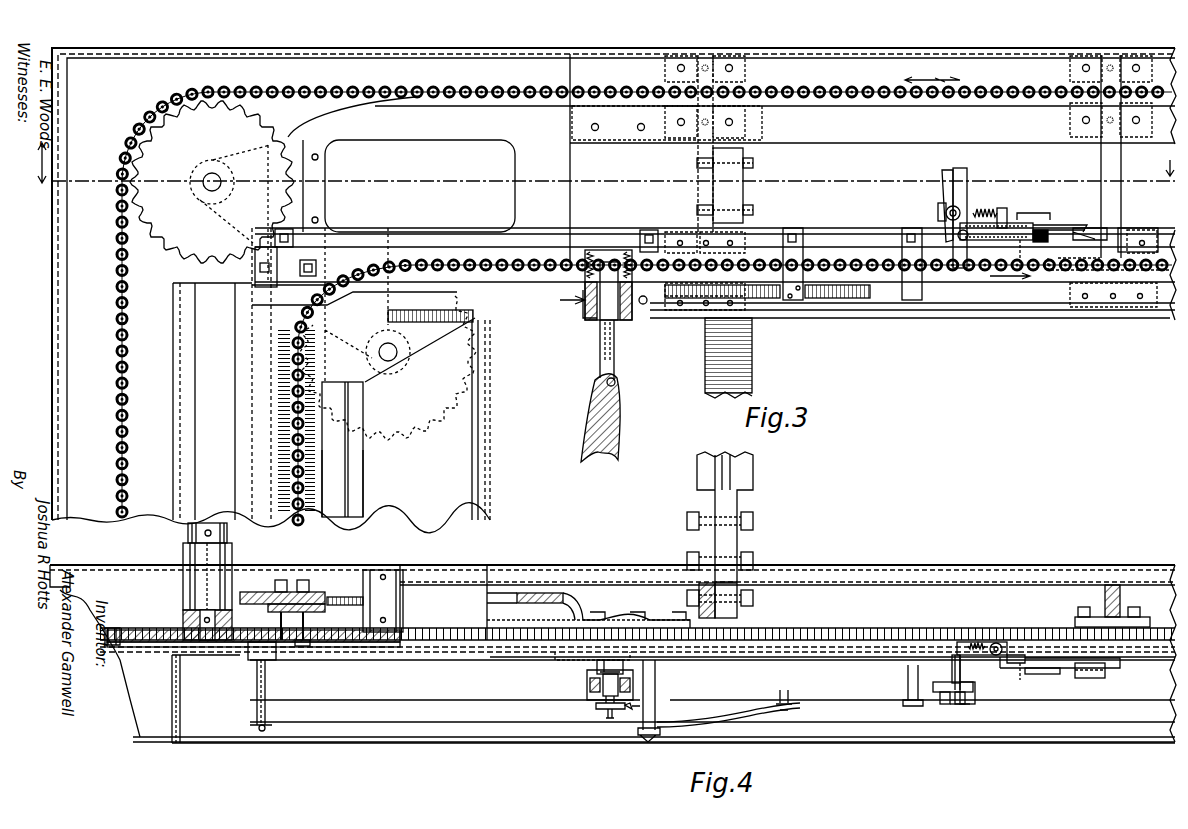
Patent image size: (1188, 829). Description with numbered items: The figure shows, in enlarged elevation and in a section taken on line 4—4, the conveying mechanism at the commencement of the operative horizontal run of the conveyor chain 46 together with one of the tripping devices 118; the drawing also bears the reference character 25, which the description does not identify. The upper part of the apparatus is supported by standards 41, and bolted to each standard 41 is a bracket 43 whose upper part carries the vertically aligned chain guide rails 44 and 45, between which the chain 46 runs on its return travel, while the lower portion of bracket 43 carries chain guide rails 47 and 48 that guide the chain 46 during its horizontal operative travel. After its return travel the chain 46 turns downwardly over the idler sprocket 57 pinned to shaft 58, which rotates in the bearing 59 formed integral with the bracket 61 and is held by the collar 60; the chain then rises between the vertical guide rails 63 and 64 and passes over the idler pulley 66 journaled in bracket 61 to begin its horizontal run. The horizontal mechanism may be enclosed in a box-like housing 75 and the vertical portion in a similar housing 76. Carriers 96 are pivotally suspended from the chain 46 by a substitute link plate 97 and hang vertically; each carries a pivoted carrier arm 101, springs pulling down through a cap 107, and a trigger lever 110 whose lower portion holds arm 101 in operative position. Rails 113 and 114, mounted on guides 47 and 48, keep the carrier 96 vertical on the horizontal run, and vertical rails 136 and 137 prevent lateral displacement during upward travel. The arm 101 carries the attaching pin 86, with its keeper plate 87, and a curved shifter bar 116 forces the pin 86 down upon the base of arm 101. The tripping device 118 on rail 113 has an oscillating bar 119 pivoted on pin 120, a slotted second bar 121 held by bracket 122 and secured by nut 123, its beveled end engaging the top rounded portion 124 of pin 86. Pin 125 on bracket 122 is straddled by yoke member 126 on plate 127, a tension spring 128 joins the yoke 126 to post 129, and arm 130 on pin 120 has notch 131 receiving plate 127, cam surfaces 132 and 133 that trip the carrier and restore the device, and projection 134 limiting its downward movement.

In FIG. 3, the section line 4— 4 is at (606, 170).
In FIG. 3, the brush / tassel 25 is at (612, 433).
In FIG. 3, the standard 41 is at (745, 190).
In FIG. 4, the standard 41 is at (753, 468).
In FIG. 3, the bracket 43 is at (698, 190).
In FIG. 4, the bracket 43 is at (700, 543).
In FIG. 3, the chain guide rail 44 is at (578, 72).
In FIG. 3, the chain guide rail 45 is at (575, 127).
In FIG. 3, the conveyor chain 46 is at (476, 92).
In FIG. 4, the conveyor chain 46 is at (112, 628).
In FIG. 3, the chain guide rail 47 is at (1162, 245).
In FIG. 4, the chain guide rail 47 is at (803, 628).
In FIG. 3, the chain guide rail 48 is at (1150, 285).
In FIG. 4, the chain guide rail 48 is at (508, 632).
In FIG. 3, the idler sprocket 57 is at (165, 150).
In FIG. 4, the idler sprocket 57 is at (150, 618).
In FIG. 3, the shaft 58 is at (211, 172).
In FIG. 4, the shaft 58 is at (200, 645).
In FIG. 4, the bearing 59 is at (213, 577).
In FIG. 4, the collar 60 is at (228, 534).
In FIG. 3, the bracket 61 is at (432, 140).
In FIG. 4, the bracket 61 is at (432, 597).
In FIG. 3, the guide rail 63 is at (278, 478).
In FIG. 3, the guide rail 64 is at (330, 486).
In FIG. 3, the idler pulley 66 is at (420, 340).
In FIG. 3, the housing 75 is at (958, 55).
In FIG. 4, the housing 75 is at (1065, 580).
In FIG. 3, the housing 76 is at (72, 405).
In FIG. 4, the housing 76 is at (110, 565).
In FIG. 3, the article attaching and identification member 86 is at (603, 330).
In FIG. 4, the article attaching and identification member 86 is at (628, 710).
In FIG. 3, the keeper plate 87 is at (600, 355).
In FIG. 3, the carrier 96 is at (585, 318).
In FIG. 4, the carrier 96 is at (588, 670).
In FIG. 4, the substitute link plate 97 is at (558, 660).
In FIG. 3, the carrier arm 101 is at (618, 325).
In FIG. 4, the carrier arm 101 is at (605, 705).
In FIG. 4, the cap 107 is at (633, 676).
In FIG. 3, the trigger lever 110 is at (608, 250).
In FIG. 4, the trigger lever 110 is at (600, 685).
In FIG. 3, the rail 113 is at (840, 248).
In FIG. 4, the rail 113 is at (510, 652).
In FIG. 3, the rail 114 is at (903, 318).
In FIG. 3, the shifter bar 116 is at (398, 297).
In FIG. 4, the shifter bar 116 is at (367, 722).
In FIG. 4, the tripping device 118 is at (989, 670).
In FIG. 3, the oscillating bar 119 is at (967, 184).
In FIG. 4, the oscillating bar 119 is at (972, 700).
In FIG. 3, the pin 120 is at (970, 236).
In FIG. 3, the second bar 121 is at (950, 185).
In FIG. 4, the second bar 121 is at (940, 702).
In FIG. 3, the bracket 122 is at (940, 210).
In FIG. 4, the bracket 122 is at (932, 684).
In FIG. 3, the nut 123 is at (945, 216).
In FIG. 4, the nut 123 is at (958, 705).
In FIG. 4, the top rounded portion 124 is at (625, 703).
In FIG. 4, the pin 125 is at (953, 672).
In FIG. 4, the yoke member 126 is at (957, 650).
In FIG. 4, the plate 127 is at (1036, 651).
In FIG. 3, the tension spring 128 is at (1003, 207).
In FIG. 4, the tension spring 128 is at (982, 640).
In FIG. 3, the post 129 is at (1012, 212).
In FIG. 4, the post 129 is at (1000, 642).
In FIG. 3, the arm 130 is at (1062, 233).
In FIG. 4, the arm 130 is at (1040, 674).
In FIG. 3, the notch 131 is at (1060, 228).
In FIG. 3, the cam surface 132 is at (1039, 255).
In FIG. 4, the cam surface 132 is at (1026, 676).
In FIG. 3, the cam surface 133 is at (1085, 252).
In FIG. 4, the cam surface 133 is at (1083, 677).
In FIG. 3, the projection 134 is at (1048, 209).
In FIG. 3, the rail 136 is at (262, 440).
In FIG. 4, the rail 136 is at (257, 660).
In FIG. 3, the rail 137 is at (330, 462).